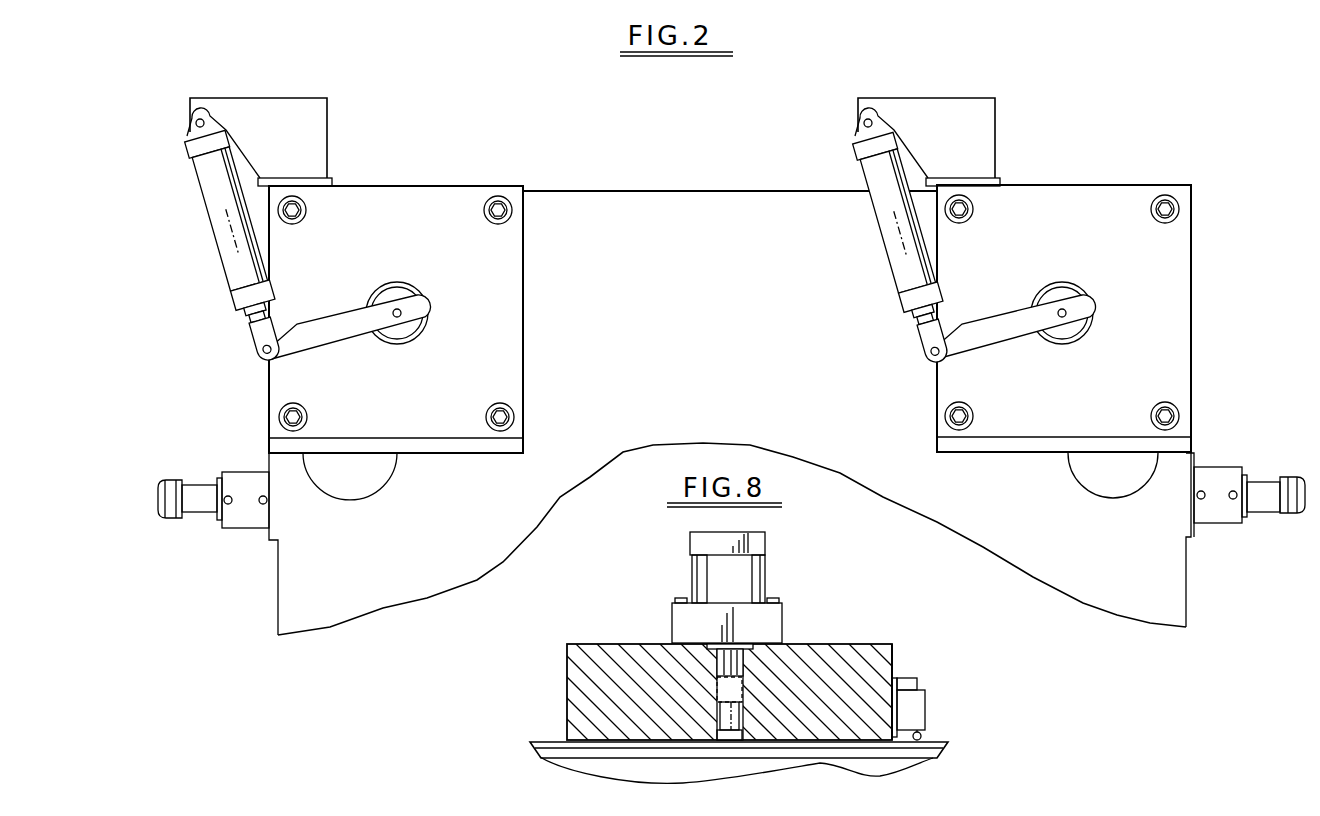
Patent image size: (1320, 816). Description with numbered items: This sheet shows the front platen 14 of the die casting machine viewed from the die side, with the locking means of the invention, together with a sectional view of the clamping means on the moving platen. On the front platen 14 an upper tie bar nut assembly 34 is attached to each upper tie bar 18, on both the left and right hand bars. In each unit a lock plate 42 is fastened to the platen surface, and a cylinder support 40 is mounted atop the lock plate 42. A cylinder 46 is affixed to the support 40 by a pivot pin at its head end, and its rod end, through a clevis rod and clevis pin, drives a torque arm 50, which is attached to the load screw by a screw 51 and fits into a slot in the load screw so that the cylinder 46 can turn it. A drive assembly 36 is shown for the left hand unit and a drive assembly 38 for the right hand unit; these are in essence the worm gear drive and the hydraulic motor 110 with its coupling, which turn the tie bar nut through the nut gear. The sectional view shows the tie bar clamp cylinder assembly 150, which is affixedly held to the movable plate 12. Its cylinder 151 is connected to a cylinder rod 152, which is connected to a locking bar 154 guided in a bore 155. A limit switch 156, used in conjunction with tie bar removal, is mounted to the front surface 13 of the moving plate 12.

In FIG. 8, the movable plate 12 is at (582, 681).
In FIG. 8, the front surface of moving plate 13 is at (893, 653).
In FIG. 2, the front platen 14 is at (691, 209).
In FIG. 8, the upper tie bar 18 is at (941, 757).
In FIG. 2, the upper tie bar nut assembly 34 is at (410, 180).
In FIG. 2, the drive assembly 36 is at (248, 518).
In FIG. 2, the right bracket block 38 is at (1220, 518).
In FIG. 2, the cylinder support 40 is at (282, 108).
In FIG. 2, the lock plate 42 is at (271, 405).
In FIG. 2, the cylinder 46 is at (227, 244).
In FIG. 2, the torque arm 50 is at (268, 362).
In FIG. 2, the screw 51 is at (400, 318).
In FIG. 2, the hydraulic motor 110 is at (197, 490).
In FIG. 8, the tie bar clamp cylinder assembly 150 is at (705, 543).
In FIG. 8, the cylinder 151 is at (741, 575).
In FIG. 8, the cylinder rod 152 is at (745, 662).
In FIG. 8, the locking bar 154 is at (672, 645).
In FIG. 8, the bore 155 is at (733, 730).
In FIG. 8, the limit switch 156 is at (925, 692).